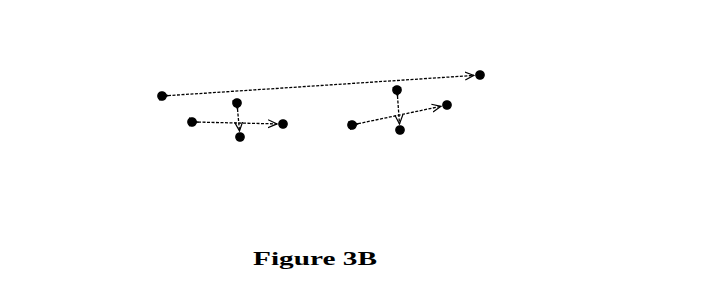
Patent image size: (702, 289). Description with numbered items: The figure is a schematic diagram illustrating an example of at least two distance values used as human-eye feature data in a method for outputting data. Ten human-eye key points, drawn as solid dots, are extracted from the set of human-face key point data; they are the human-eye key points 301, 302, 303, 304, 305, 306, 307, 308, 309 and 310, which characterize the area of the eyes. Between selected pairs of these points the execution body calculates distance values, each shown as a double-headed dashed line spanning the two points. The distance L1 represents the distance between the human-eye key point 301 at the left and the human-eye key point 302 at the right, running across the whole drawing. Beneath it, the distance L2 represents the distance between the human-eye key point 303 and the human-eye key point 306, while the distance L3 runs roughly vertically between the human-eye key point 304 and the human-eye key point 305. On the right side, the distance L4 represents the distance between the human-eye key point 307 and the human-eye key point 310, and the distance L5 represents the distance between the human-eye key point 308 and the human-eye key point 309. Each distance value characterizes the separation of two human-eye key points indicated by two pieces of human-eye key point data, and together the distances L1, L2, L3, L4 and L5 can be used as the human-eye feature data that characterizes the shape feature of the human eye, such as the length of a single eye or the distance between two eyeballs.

The human-eye key point 301 is at (158, 95).
The human-eye key point 302 is at (484, 73).
The human-eye key point 303 is at (189, 125).
The human-eye key point 304 is at (235, 100).
The human-eye key point 305 is at (239, 141).
The human-eye key point 306 is at (284, 128).
The human-eye key point 307 is at (352, 129).
The human-eye key point 308 is at (398, 86).
The human-eye key point 309 is at (401, 134).
The human-eye key point 310 is at (451, 105).
The distance L1 is at (255, 86).
The distance L2 is at (217, 124).
The distance L3 is at (243, 118).
The distance L4 is at (377, 117).
The distance L5 is at (402, 111).